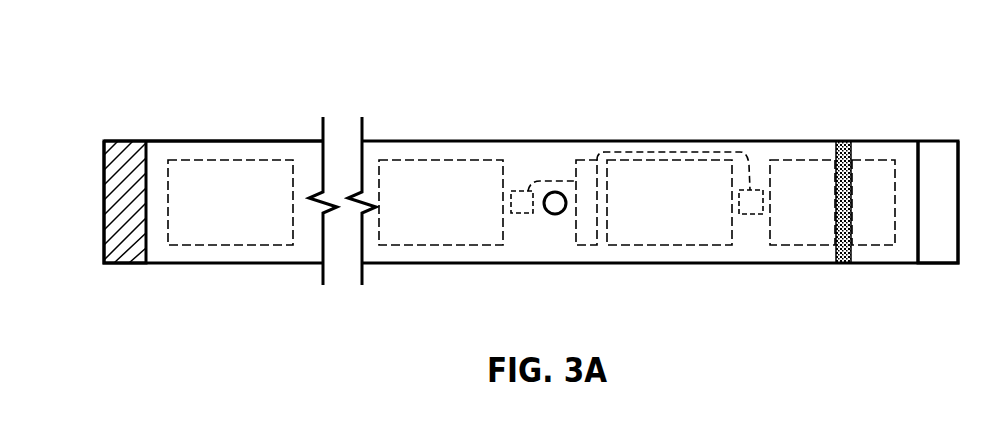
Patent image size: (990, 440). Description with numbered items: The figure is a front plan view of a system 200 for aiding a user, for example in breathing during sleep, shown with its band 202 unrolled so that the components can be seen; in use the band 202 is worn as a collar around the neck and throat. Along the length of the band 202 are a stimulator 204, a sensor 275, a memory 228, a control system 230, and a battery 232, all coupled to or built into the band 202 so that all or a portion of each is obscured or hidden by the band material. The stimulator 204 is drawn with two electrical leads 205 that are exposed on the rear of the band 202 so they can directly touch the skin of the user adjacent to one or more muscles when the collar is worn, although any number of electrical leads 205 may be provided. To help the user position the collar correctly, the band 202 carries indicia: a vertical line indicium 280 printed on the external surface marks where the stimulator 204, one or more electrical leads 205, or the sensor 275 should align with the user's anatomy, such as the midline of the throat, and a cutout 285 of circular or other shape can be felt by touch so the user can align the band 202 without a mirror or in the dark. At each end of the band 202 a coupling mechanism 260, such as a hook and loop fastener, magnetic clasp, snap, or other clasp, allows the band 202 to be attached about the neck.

The system 200 is at (140, 78).
The band 202 is at (307, 141).
The stimulator 204 is at (581, 160).
The electrical leads 205 is at (521, 191).
The memory 228 is at (633, 245).
The control system 230 is at (405, 245).
The battery 232 is at (196, 245).
The coupling mechanism 260 is at (127, 245).
The sensor 275 is at (797, 245).
The vertical line indicium 280 is at (849, 233).
The cutout 285 is at (551, 213).